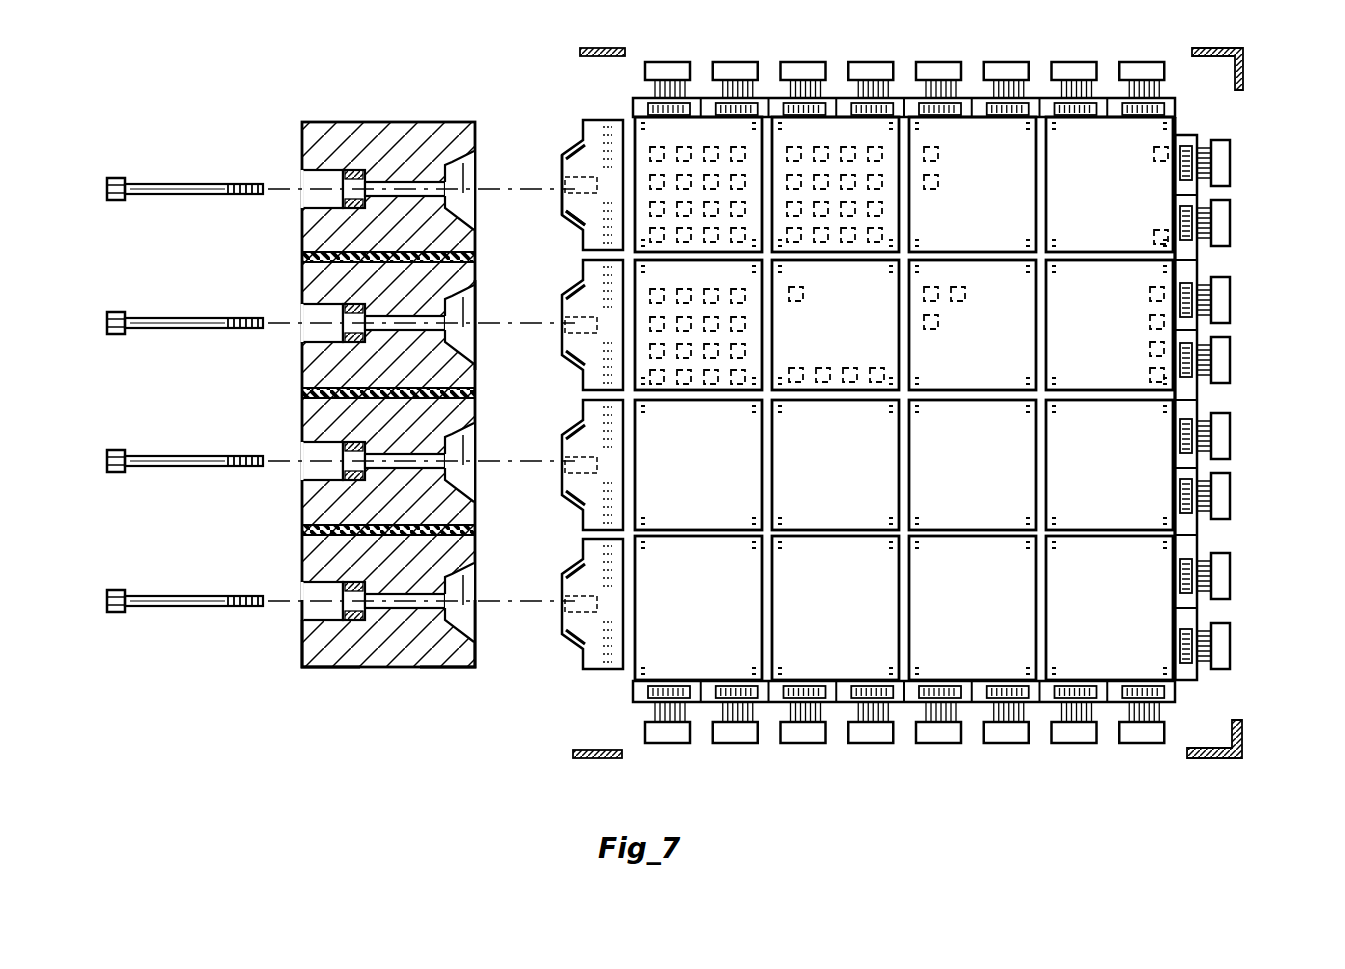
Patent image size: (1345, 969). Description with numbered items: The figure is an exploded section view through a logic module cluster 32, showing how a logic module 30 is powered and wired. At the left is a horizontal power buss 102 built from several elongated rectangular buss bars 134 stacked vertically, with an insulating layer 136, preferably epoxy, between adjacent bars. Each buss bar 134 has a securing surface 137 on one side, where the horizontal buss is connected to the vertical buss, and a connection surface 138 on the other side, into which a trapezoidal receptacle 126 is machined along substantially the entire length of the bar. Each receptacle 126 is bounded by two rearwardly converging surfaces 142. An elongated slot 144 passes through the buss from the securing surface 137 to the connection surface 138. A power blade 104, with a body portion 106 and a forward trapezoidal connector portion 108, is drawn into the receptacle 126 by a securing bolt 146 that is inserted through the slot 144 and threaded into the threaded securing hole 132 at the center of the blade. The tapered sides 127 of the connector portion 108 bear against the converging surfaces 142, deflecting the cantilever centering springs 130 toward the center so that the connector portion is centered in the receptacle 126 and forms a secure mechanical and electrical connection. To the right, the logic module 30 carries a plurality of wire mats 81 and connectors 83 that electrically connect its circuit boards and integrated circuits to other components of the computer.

The logic module 30 is at (979, 411).
The logic module cluster 32 is at (1292, 36).
The wire mat 81 is at (878, 66).
The connector 83 is at (1130, 68).
The horizontal power buss 102 is at (326, 423).
The power blade 104 is at (580, 118).
The body portion 106 is at (606, 118).
The connector portion 108 is at (566, 183).
The receptacle 126 is at (457, 170).
The tapered side 127 is at (572, 432).
The centering spring 130 is at (572, 572).
The threaded securing hole 132 is at (580, 210).
The buss bar 134 is at (305, 228).
The insulating layer 136 is at (305, 258).
The securing surface 137 is at (298, 657).
The connection surface 138 is at (478, 668).
The converging surface 142 is at (456, 283).
The elongated slot 144 is at (380, 187).
The securing bolt 146 is at (148, 186).